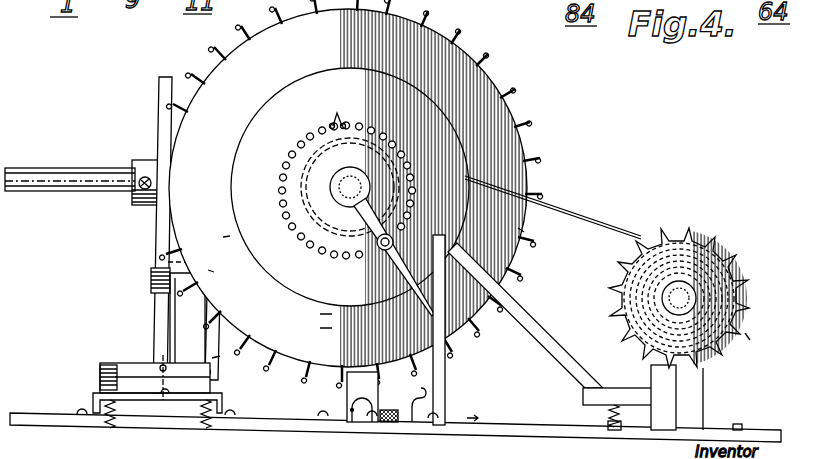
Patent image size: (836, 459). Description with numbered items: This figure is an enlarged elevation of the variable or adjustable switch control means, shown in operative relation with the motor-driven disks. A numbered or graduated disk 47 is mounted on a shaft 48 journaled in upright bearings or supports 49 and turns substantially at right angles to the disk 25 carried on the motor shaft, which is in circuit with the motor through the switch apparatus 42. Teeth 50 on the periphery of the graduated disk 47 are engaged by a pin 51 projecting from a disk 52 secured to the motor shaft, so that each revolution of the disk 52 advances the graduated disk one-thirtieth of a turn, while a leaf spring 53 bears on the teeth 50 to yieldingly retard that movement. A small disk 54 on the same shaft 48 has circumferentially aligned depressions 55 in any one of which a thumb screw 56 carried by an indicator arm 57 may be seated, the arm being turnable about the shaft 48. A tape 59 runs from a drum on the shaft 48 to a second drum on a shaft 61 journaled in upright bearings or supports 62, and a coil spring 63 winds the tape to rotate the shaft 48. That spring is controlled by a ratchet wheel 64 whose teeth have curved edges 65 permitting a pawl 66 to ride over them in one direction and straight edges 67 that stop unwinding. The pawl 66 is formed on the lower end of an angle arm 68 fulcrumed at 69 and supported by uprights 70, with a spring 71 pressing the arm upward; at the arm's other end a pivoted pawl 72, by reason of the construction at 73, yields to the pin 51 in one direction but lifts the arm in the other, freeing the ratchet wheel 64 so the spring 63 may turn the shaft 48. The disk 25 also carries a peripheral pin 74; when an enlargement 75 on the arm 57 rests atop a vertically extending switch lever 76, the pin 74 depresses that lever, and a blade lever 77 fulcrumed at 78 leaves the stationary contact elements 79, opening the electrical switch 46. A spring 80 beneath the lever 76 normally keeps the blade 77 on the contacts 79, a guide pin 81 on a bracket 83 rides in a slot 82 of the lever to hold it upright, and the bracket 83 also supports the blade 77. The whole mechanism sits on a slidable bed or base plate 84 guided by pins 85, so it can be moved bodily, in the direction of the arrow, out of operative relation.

The disk 25 is at (220, 98).
The switch apparatus 42 is at (375, 194).
The electrical switch 46 is at (118, 358).
The numbered or graduated disk 47 is at (478, 118).
The shaft 48 is at (370, 162).
The upright bearings or supports 49 is at (338, 393).
The teeth 50 is at (483, 62).
The pin 51 is at (150, 170).
The disk 52 is at (158, 245).
The leaf spring 53 is at (363, 423).
The small disk 54 is at (457, 157).
The depressions 55 is at (372, 88).
The thumb screw 56 is at (366, 266).
The indicator arm 57 is at (375, 230).
The tape 59 is at (573, 204).
The shaft 61 is at (700, 245).
The upright bearings or supports 62 is at (691, 388).
The coil spring 63 is at (689, 240).
The ratchet wheel 64 is at (791, 261).
The curved tooth edges 65 is at (745, 325).
The pawl 66 is at (668, 392).
The straight tooth edges 67 is at (749, 337).
The angle arm 68 is at (523, 325).
The fulcrum 69 is at (520, 230).
The uprights 70 is at (447, 387).
The spring 71 is at (609, 412).
The pivoted pawl 72 is at (185, 160).
The pawl construction 73 is at (187, 163).
The peripheral pin 74 is at (333, 180).
The enlargement 75 is at (320, 315).
The switch lever 76 is at (216, 358).
The lever or blade 77 is at (141, 370).
The fulcrum 78 is at (165, 365).
The stationary contact elements 79 is at (100, 368).
The spring 80 is at (210, 393).
The guide pin 81 is at (213, 272).
The slot 82 is at (223, 237).
The bracket 83 is at (160, 297).
The bed or base plate 84 is at (502, 428).
The pins 85 is at (742, 428).